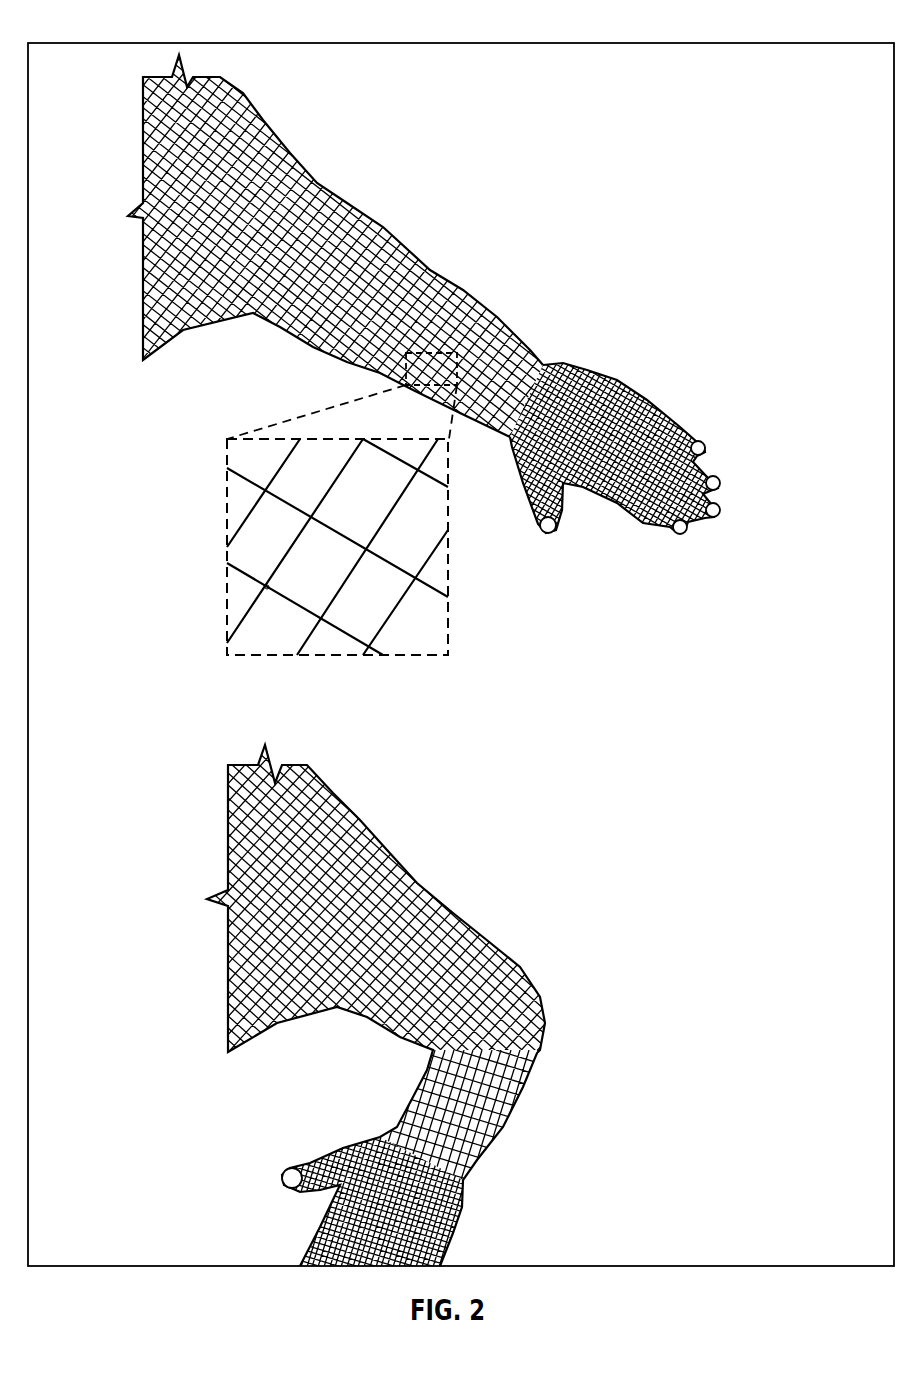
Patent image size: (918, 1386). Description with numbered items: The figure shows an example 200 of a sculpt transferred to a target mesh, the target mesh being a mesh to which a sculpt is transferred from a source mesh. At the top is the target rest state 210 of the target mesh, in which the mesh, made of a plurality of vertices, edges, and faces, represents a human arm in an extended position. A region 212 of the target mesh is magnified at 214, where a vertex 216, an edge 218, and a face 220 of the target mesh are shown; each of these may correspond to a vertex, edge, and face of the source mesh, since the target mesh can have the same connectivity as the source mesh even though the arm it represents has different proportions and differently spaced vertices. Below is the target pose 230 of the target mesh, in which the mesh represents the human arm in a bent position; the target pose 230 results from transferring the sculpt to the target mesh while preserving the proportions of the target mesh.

The example 200 is at (119, 43).
The target rest state 210 is at (434, 244).
The region 212 is at (463, 308).
The magnified view 214 is at (300, 440).
The vertex 216 is at (267, 587).
The edge 218 is at (307, 615).
The face 220 is at (313, 573).
The target pose 230 is at (484, 909).